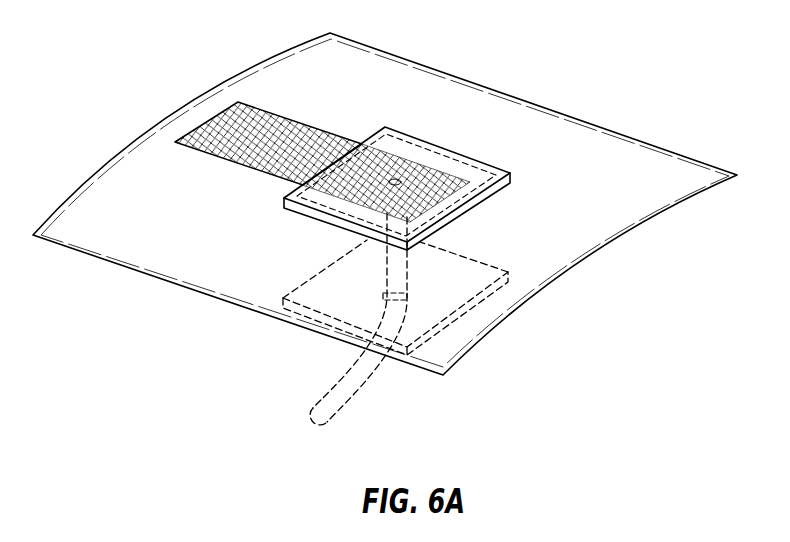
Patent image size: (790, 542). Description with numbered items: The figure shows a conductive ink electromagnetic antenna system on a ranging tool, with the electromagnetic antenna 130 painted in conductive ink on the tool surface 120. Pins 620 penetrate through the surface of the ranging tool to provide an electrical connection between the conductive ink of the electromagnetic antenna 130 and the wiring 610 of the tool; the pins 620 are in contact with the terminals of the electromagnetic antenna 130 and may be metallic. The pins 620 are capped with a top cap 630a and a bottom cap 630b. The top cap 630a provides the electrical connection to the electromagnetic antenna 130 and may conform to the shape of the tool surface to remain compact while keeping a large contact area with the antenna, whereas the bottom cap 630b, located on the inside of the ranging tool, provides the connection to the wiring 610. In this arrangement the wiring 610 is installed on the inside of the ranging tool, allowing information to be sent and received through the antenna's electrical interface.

The flexible substrate / sheet 120 is at (412, 75).
The electromagnetic antenna 130 is at (288, 132).
The top cap 630a is at (488, 192).
The bottom cap 630b is at (467, 305).
The wiring 610 is at (350, 395).
The pins 620 is at (393, 280).